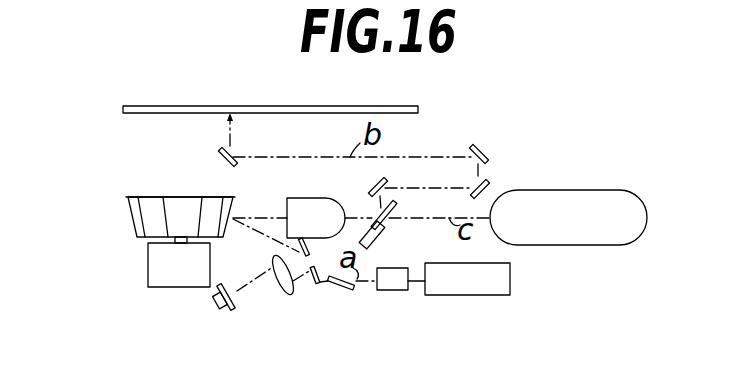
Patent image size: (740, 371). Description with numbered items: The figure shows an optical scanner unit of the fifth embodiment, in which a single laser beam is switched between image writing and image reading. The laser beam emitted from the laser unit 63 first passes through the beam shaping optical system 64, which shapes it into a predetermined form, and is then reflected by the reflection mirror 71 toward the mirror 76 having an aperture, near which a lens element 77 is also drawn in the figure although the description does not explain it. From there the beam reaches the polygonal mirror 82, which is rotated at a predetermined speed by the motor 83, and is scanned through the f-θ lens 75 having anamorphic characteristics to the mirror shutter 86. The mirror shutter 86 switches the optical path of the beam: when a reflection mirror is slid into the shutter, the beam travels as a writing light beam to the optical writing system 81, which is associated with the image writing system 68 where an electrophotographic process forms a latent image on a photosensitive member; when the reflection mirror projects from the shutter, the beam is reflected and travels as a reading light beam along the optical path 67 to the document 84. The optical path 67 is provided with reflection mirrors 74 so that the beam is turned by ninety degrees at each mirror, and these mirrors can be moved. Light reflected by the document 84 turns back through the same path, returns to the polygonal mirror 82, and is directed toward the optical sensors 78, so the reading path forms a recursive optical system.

The laser unit 63 is at (485, 296).
The beam shaping optical system 64 is at (392, 291).
The optical path 67 is at (462, 141).
The image writing system 68 is at (645, 235).
The reflection mirror 71 is at (343, 292).
The reflection mirror 74 is at (218, 165).
The f-θ lens 75 is at (315, 198).
The mirror having an aperture 76 is at (314, 286).
The lens 77 is at (278, 284).
The optical sensor 78 is at (226, 308).
The optical writing system 81 is at (597, 246).
The polygonal mirror 82 is at (128, 208).
The motor 83 is at (148, 266).
The document 84 is at (380, 106).
The mirror shutter 86 is at (386, 221).